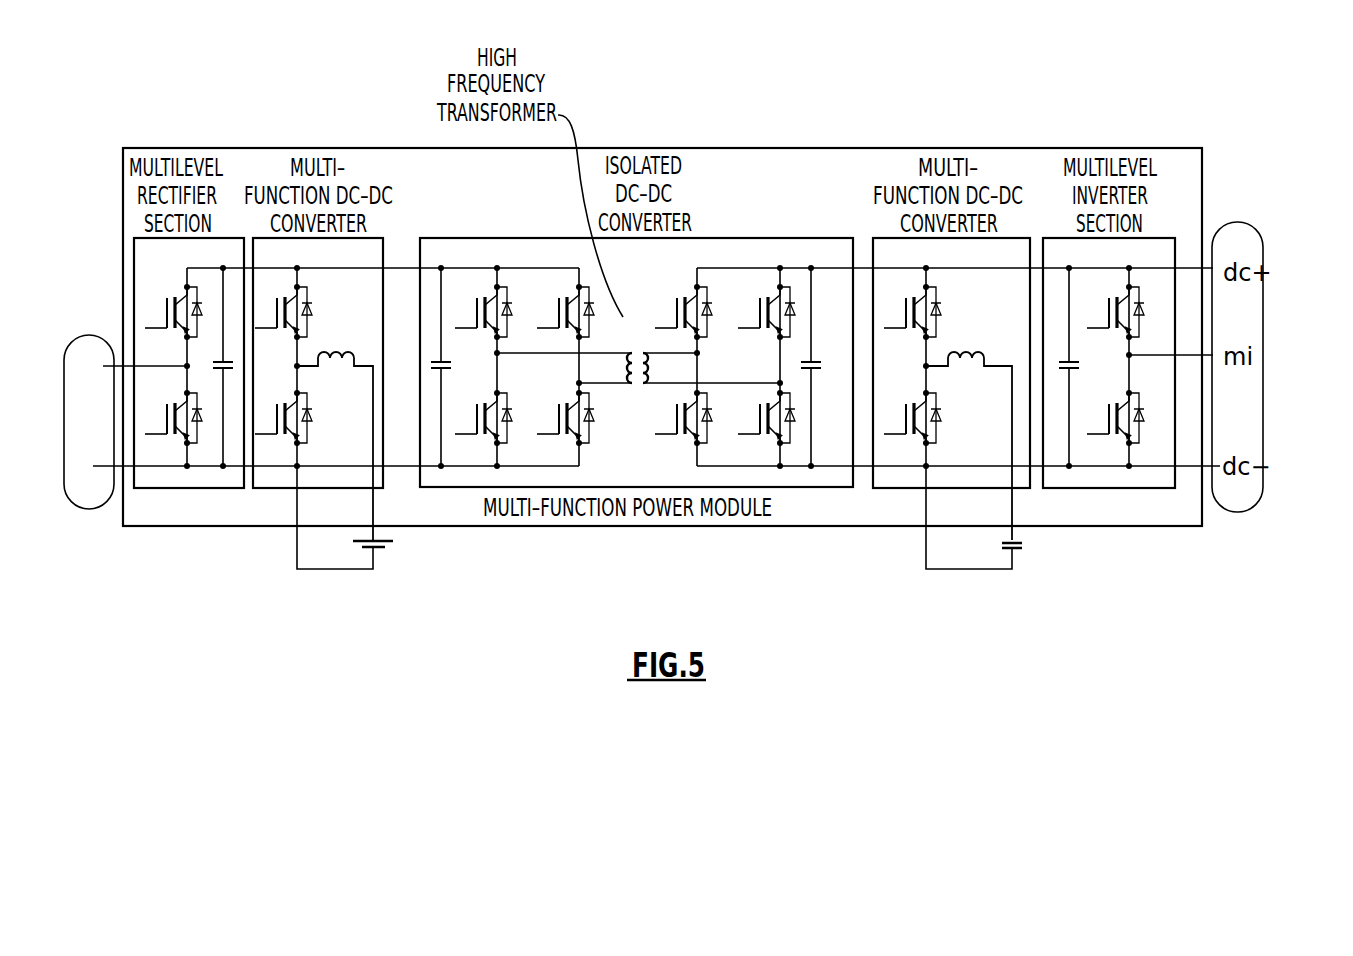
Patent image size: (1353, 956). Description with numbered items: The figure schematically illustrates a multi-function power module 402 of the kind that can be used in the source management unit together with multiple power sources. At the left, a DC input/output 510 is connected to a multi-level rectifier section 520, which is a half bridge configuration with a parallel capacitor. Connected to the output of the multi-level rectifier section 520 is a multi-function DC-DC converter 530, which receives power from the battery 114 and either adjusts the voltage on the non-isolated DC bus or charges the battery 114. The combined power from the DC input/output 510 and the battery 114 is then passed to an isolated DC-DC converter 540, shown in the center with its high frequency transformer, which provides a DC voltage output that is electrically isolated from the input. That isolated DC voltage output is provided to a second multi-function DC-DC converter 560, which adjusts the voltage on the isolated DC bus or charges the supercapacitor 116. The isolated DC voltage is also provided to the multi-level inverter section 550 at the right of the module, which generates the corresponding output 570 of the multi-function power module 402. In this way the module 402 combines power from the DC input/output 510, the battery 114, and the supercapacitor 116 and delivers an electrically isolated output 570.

The multi-function power module 402 is at (139, 126).
The DC input/output 510 is at (89, 335).
The multi-level rectifier section 520 is at (193, 488).
The multi-function DC-DC converter 530 is at (384, 247).
The isolated DC-DC converter 540 is at (737, 238).
The multi-level inverter section 550 is at (1173, 238).
The second multi-function DC-DC converter 560 is at (898, 488).
The output 570 is at (1263, 309).
The battery 114 is at (393, 546).
The supercapacitor 116 is at (1018, 552).